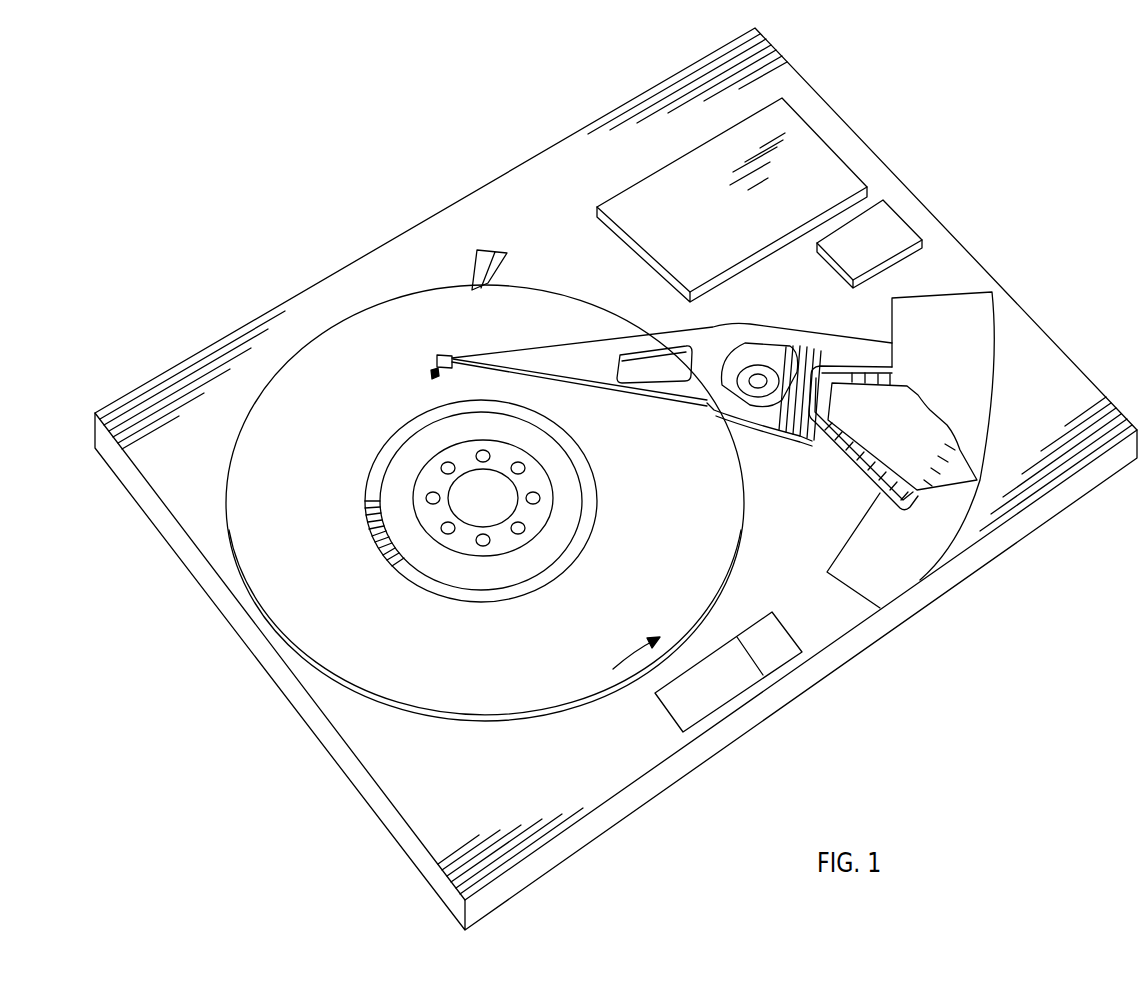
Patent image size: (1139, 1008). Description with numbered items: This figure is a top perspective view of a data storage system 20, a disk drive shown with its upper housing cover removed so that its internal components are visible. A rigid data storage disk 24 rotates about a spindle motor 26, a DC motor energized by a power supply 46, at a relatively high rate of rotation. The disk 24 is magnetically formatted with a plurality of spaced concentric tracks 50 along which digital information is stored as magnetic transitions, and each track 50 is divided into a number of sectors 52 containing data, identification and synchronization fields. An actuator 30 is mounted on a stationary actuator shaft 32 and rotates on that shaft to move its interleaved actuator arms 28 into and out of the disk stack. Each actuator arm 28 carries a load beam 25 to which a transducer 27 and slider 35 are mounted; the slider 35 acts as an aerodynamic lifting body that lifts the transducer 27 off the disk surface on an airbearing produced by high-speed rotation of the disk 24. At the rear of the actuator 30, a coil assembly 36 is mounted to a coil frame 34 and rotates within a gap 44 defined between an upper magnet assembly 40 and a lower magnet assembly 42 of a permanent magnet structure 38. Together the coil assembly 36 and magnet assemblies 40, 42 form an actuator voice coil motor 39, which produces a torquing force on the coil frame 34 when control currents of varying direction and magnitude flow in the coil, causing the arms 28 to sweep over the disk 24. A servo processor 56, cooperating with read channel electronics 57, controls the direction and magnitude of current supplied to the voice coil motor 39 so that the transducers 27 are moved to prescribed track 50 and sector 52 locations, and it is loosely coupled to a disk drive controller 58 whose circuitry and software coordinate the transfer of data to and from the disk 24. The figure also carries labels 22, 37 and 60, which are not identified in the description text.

The data storage system 20 is at (942, 160).
The base plate 22 is at (790, 690).
The data storage disk 24 is at (290, 485).
The load beam 25 is at (462, 364).
The spindle motor 26 is at (502, 522).
The transducer 27 is at (432, 376).
The actuator arm 28 is at (590, 368).
The actuator 30 is at (777, 424).
The actuator shaft 32 is at (758, 372).
The coil frame 34 is at (816, 344).
The slider 35 is at (437, 356).
The coil assembly 36 is at (843, 389).
The arm rotation direction 37 is at (750, 440).
The permanent magnet structure 38 is at (995, 321).
The actuator voice coil motor 39 is at (878, 494).
The upper magnet assembly 40 is at (984, 375).
The lower magnet assembly 42 is at (848, 576).
The gap 44 is at (960, 465).
The power supply 46 is at (697, 237).
The track 50 is at (380, 448).
The sector 52 is at (370, 526).
The servo processor 56 is at (740, 682).
The read channel electronics 57 is at (780, 657).
The disk drive controller 58 is at (882, 251).
The latch 60 is at (495, 250).